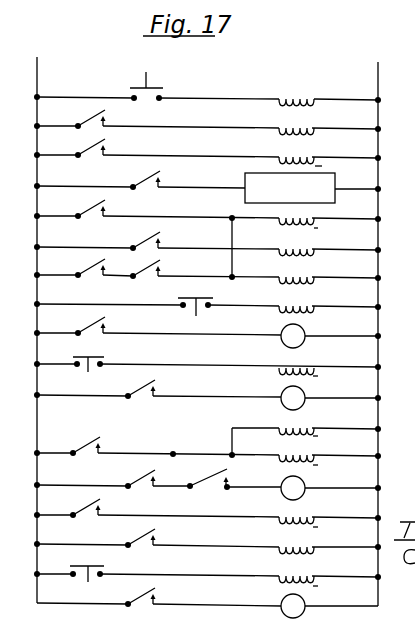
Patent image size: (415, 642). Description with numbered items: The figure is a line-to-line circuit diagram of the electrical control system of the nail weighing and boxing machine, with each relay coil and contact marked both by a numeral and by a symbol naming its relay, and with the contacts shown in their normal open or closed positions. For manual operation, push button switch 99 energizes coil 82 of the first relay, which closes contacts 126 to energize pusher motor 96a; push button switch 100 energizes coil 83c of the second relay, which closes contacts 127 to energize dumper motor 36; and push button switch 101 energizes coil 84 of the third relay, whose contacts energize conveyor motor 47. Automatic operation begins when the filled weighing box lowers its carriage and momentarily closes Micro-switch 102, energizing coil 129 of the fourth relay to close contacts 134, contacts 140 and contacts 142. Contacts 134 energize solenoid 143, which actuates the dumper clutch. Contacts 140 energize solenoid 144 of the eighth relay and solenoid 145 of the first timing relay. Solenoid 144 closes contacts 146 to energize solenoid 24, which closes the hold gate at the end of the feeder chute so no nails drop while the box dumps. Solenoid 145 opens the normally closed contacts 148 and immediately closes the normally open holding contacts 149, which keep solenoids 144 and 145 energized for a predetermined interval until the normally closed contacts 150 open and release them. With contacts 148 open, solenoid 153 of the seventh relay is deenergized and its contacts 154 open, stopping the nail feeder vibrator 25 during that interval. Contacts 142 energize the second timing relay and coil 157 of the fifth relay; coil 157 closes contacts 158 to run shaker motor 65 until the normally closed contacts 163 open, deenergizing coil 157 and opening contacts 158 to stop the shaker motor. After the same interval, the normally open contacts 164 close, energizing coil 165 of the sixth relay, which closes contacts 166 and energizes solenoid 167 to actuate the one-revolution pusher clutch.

The Micro-switch 102 is at (149, 84).
The coil of relay R-4 129 is at (290, 98).
The contacts of relay R-4 134 is at (110, 117).
The solenoid 143 is at (290, 132).
The normally closed contacts of timing relay TR-1 148 is at (110, 146).
The solenoid of relay R-7 153 is at (305, 161).
The contacts of relay R-7 154 is at (164, 176).
The nail feeder vibrator 25 is at (245, 188).
The contacts of relay R-4 140 is at (110, 208).
The solenoid of relay R-8 144 is at (312, 223).
The contacts of relay R-8 146 is at (164, 237).
The solenoid 24 is at (290, 252).
The normally closed contacts of timing relay TR-1 150 is at (101, 264).
The normally open holding contacts of timing relay TR-1 149 is at (164, 265).
The solenoid of timing relay TR-1 145 is at (310, 284).
The push button switch 99 is at (182, 303).
The coil of relay R-1 82 is at (290, 311).
The contacts of relay R-1 126 is at (110, 325).
The pusher motor 96a is at (306, 337).
The push button switch 100 is at (105, 357).
The coil of relay R-2 83c is at (300, 370).
The contacts of relay R-2 127 is at (150, 384).
The dumper motor 36 is at (281, 398).
The coil of relay R-5 157 is at (286, 459).
The contacts of relay R-4 142 is at (103, 446).
The contacts of relay R-5 158 is at (158, 478).
The normally closed contacts of timing relay TR-2 163 is at (222, 471).
The shaker motor 65 is at (281, 487).
The normally open contacts of timing relay TR-2 164 is at (103, 507).
The coil of relay R-6 165 is at (300, 522).
The contacts of relay R-6 166 is at (158, 535).
The solenoid 167 is at (290, 550).
The push button switch 101 is at (78, 584).
The coil of relay R-3 84 is at (300, 582).
The conveyor motor 47 is at (302, 614).